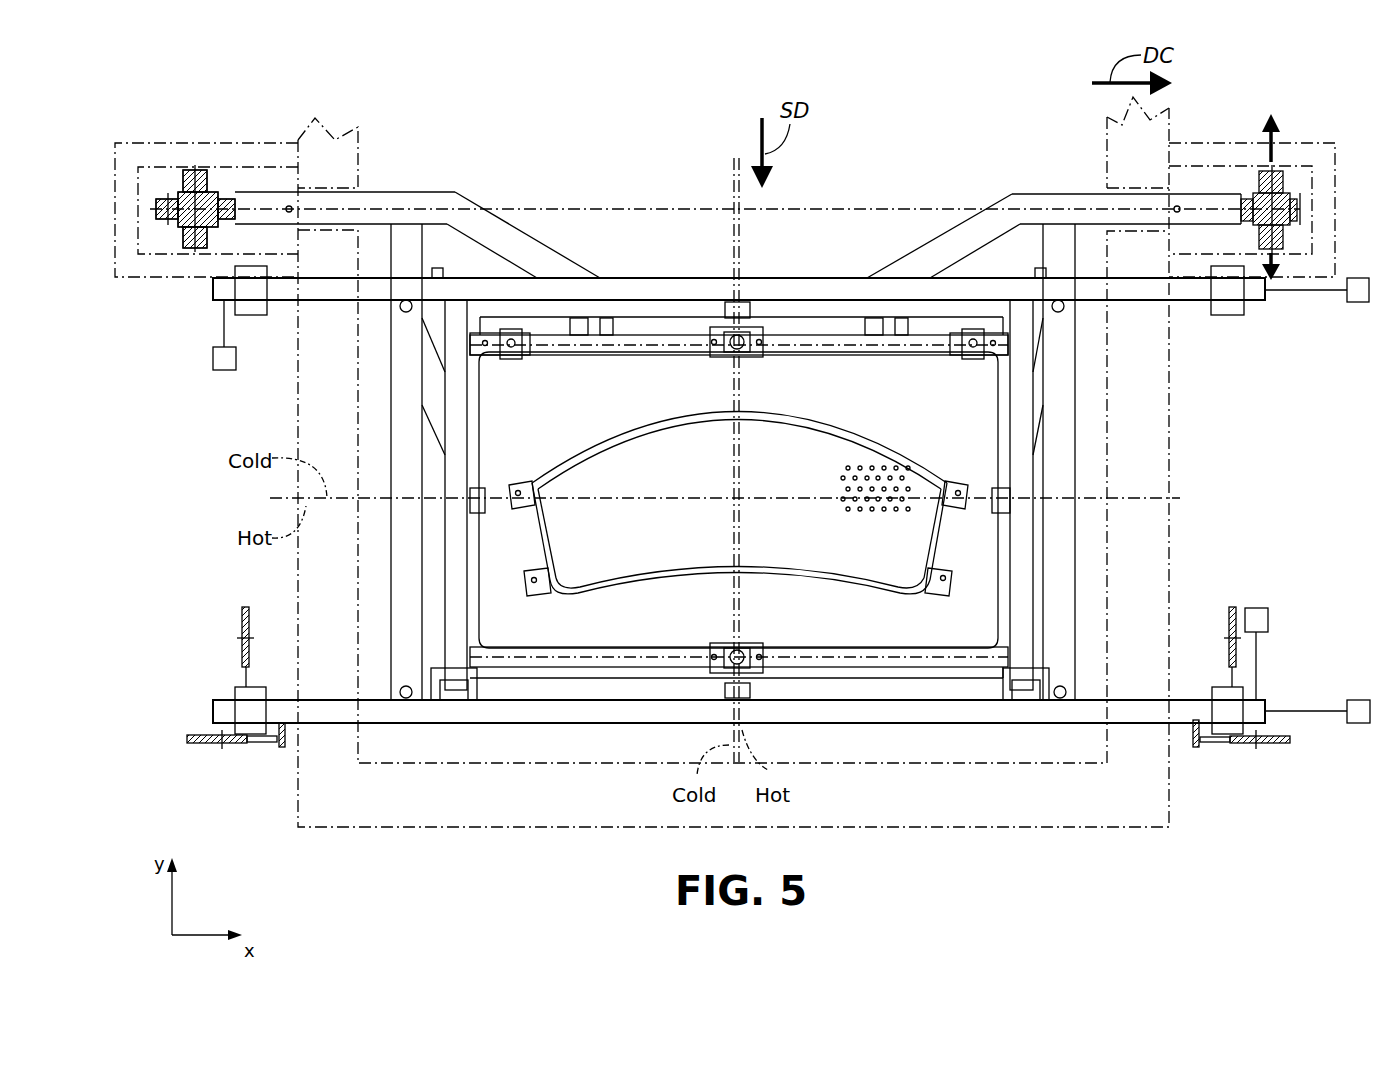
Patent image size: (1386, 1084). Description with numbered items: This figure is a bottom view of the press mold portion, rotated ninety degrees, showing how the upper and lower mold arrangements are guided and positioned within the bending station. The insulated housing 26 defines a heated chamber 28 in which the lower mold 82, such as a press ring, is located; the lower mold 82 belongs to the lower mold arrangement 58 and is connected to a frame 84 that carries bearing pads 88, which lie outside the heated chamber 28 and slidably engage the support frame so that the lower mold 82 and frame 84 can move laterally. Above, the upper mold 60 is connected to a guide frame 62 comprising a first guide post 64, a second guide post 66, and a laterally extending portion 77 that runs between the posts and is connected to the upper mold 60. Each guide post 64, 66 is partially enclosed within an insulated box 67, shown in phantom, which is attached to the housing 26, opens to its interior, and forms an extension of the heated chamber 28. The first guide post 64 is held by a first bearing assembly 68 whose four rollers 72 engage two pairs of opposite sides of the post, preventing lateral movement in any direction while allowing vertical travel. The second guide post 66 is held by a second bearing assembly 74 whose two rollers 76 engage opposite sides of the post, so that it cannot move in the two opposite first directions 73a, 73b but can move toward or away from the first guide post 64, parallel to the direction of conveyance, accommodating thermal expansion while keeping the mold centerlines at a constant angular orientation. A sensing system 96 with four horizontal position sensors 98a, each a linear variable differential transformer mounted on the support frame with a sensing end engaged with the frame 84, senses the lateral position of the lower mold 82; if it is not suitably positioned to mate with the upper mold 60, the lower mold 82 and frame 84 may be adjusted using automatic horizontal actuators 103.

The insulated housing 26 is at (1192, 478).
The heated chamber 28 is at (1100, 530).
The lower mold arrangement 58 is at (155, 705).
The upper mold 60 is at (912, 468).
The guide frame 62 is at (490, 188).
The first guide post 64 is at (208, 195).
The second guide post 66 is at (1290, 205).
The insulated box 67 is at (262, 143).
The first bearing assembly 68 is at (148, 182).
The rollers 72 is at (188, 183).
The first direction 73a is at (1262, 136).
The first direction 73b is at (1275, 262).
The second bearing assembly 74 is at (1302, 180).
The rollers 76 is at (1285, 243).
The laterally extending portion 77 is at (937, 237).
The lower mold 82 is at (893, 447).
The frame 84 is at (385, 725).
The bearing pads 88 is at (245, 315).
The sensing system 96 is at (1242, 785).
The horizontal position sensors 98a is at (242, 620).
The automatic horizontal actuators 103 is at (213, 360).